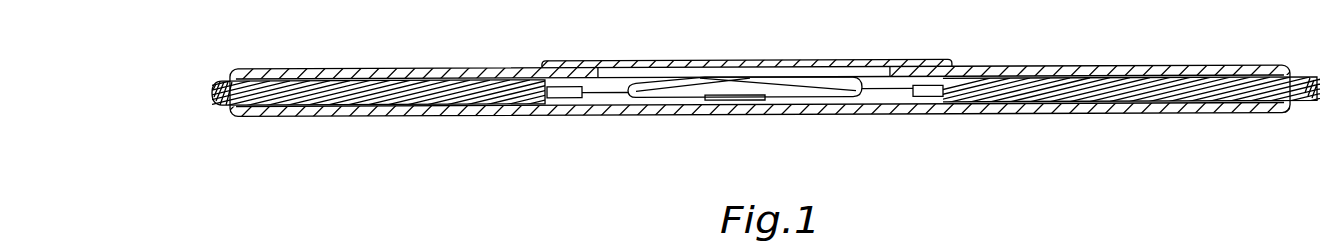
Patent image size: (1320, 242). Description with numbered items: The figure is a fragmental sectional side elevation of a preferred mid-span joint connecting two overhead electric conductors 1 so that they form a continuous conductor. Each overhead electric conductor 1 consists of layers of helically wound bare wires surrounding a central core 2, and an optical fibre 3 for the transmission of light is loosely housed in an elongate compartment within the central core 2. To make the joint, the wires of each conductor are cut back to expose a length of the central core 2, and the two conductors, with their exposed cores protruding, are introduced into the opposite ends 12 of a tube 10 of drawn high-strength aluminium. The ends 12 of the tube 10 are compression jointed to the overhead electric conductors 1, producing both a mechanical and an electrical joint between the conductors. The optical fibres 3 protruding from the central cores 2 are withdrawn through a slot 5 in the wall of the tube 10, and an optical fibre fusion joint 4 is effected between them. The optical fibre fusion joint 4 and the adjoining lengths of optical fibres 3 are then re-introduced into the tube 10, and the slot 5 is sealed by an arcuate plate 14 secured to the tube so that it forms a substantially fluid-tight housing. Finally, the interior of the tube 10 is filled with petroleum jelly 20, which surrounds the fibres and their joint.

The overhead electric conductor 1 is at (221, 78).
The central core 2 is at (564, 97).
The optical fibre 3 is at (606, 93).
The optical fibre fusion joint 4 is at (740, 100).
The slot 5 is at (836, 68).
The tube 10 is at (820, 121).
The ends of the tube 12 is at (311, 78).
The arcuate plate 14 is at (713, 68).
The petroleum jelly 20 is at (617, 83).